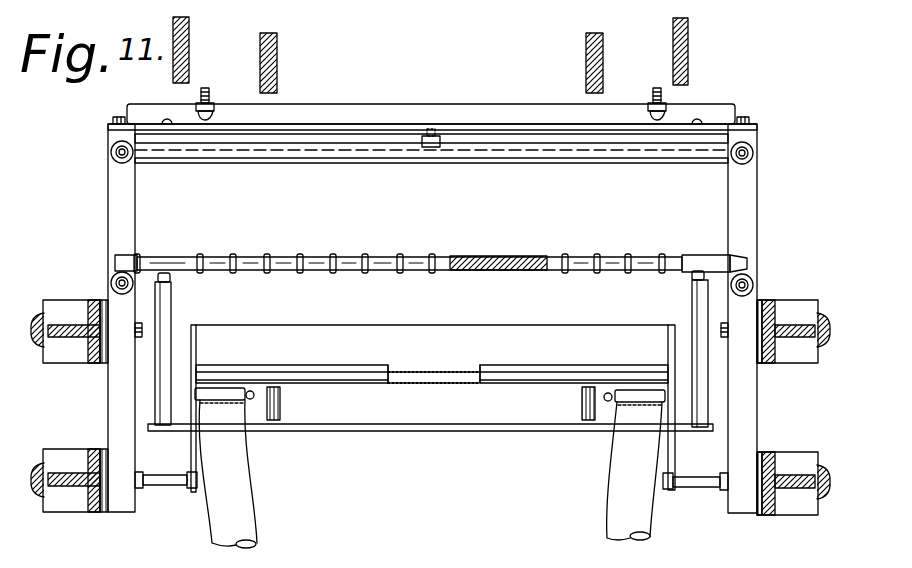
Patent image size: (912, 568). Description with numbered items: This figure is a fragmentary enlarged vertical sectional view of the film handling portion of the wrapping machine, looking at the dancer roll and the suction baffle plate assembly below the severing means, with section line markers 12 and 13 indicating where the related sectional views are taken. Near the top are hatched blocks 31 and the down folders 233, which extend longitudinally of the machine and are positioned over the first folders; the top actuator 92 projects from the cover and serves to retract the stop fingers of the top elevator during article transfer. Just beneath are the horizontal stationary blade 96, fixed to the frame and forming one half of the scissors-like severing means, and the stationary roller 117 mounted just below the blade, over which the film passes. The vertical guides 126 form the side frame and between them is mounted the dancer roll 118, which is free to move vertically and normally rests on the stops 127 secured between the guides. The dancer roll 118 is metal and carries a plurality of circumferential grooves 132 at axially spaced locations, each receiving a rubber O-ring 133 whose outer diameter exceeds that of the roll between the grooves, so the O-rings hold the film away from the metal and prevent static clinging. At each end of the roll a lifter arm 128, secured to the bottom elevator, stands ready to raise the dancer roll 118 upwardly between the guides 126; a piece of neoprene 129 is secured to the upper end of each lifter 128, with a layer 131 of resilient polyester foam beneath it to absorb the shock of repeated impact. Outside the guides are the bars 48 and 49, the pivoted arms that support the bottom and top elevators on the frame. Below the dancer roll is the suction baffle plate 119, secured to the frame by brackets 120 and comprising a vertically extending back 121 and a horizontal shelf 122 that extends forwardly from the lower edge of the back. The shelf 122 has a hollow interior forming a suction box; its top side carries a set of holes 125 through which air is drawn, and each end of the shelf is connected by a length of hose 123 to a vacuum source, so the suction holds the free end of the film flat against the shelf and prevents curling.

The guide block 31 is at (190, 30).
The down folder 233 is at (286, 44).
The top actuator 92 is at (214, 117).
The stationary blade 96 is at (318, 137).
The stationary roller 117 is at (311, 161).
The vertically extending guides 126 is at (118, 186).
The stop 127 is at (112, 280).
The upper bar 49 is at (56, 307).
The lower bar 48 is at (77, 503).
The dancer roll 118 is at (315, 258).
The rubber O-ring 133 is at (430, 255).
The circumferential groove 132 is at (518, 253).
The layer of resilient material 131 is at (173, 282).
The piece of neoprene 129 is at (173, 274).
The lifter arm 128 is at (158, 360).
The back 121 is at (378, 331).
The suction baffle plate 119 is at (404, 396).
The shelf 122 is at (529, 381).
The set of holes 125 is at (448, 366).
The hose 123 is at (242, 520).
The bracket 120 is at (193, 452).
The section line 13- 13 is at (410, 86).
The section line 12- 12 is at (173, 312).